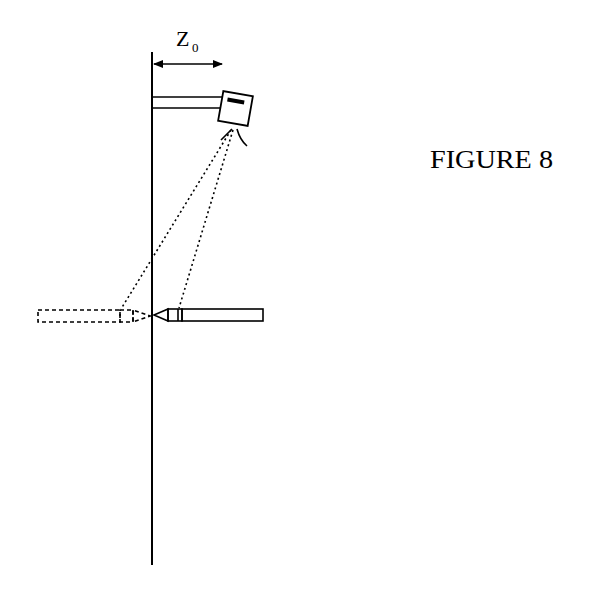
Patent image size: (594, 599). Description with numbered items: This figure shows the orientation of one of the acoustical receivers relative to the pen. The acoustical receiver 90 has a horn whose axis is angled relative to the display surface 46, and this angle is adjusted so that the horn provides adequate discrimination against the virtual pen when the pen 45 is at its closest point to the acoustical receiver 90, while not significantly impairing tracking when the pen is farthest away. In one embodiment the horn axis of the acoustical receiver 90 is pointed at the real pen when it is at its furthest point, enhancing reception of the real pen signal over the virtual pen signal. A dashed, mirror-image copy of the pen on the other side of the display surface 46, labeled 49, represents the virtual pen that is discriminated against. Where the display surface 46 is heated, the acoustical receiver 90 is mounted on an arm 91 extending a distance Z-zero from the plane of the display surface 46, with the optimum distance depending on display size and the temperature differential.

The pen 45 is at (263, 313).
The display surface 46 is at (152, 162).
The probe in retracted position 49 is at (75, 317).
The acoustical receiver 90 is at (254, 113).
The arm 91 is at (190, 97).